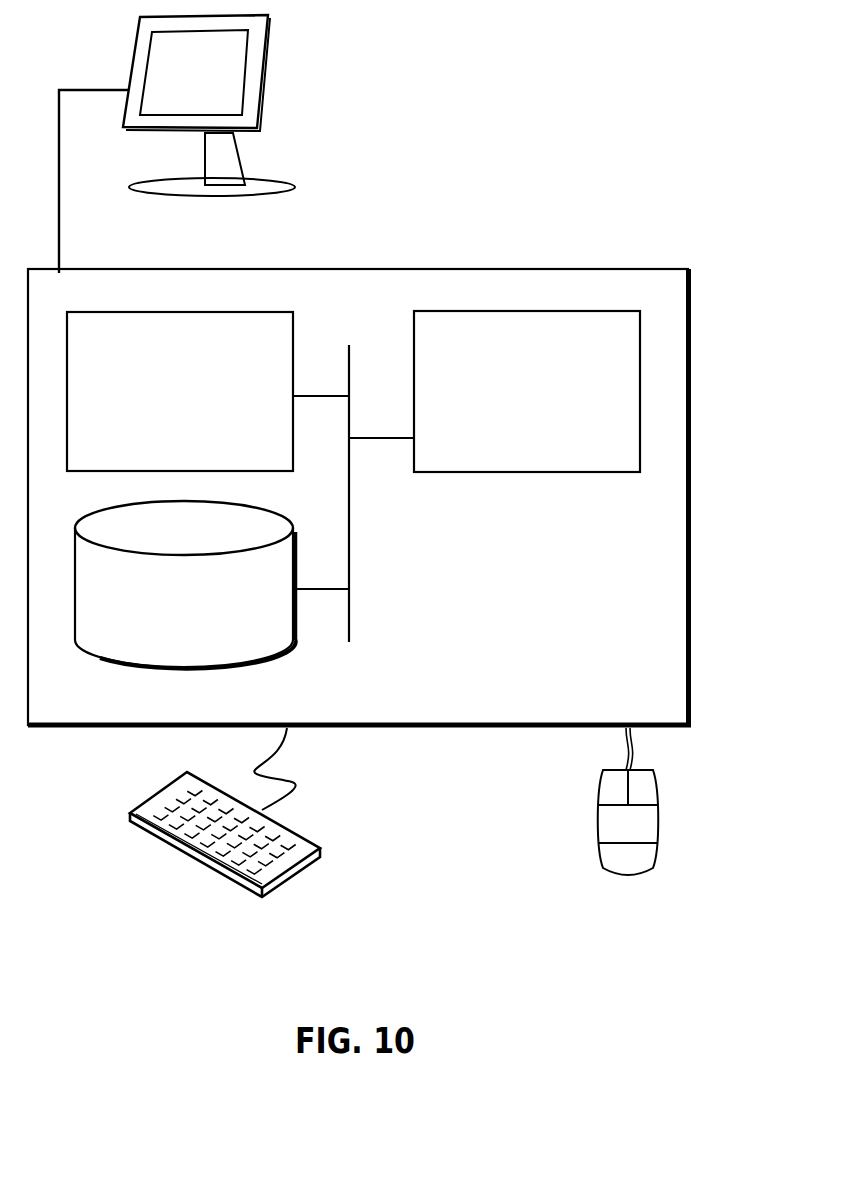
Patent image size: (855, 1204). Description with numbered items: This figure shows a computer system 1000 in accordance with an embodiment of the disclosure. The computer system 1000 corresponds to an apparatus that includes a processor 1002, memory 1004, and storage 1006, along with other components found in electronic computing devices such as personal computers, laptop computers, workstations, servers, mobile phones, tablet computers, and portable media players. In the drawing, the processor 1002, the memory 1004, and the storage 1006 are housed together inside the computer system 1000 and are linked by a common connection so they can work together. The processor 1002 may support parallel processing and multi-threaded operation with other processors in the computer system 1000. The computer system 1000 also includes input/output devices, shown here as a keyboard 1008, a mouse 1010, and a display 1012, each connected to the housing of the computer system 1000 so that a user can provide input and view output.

The computer system 1000 is at (403, 247).
The processor 1002 is at (560, 403).
The memory 1004 is at (209, 402).
The storage 1006 is at (217, 615).
The keyboard 1008 is at (150, 833).
The mouse 1010 is at (628, 801).
The display 1012 is at (177, 144).